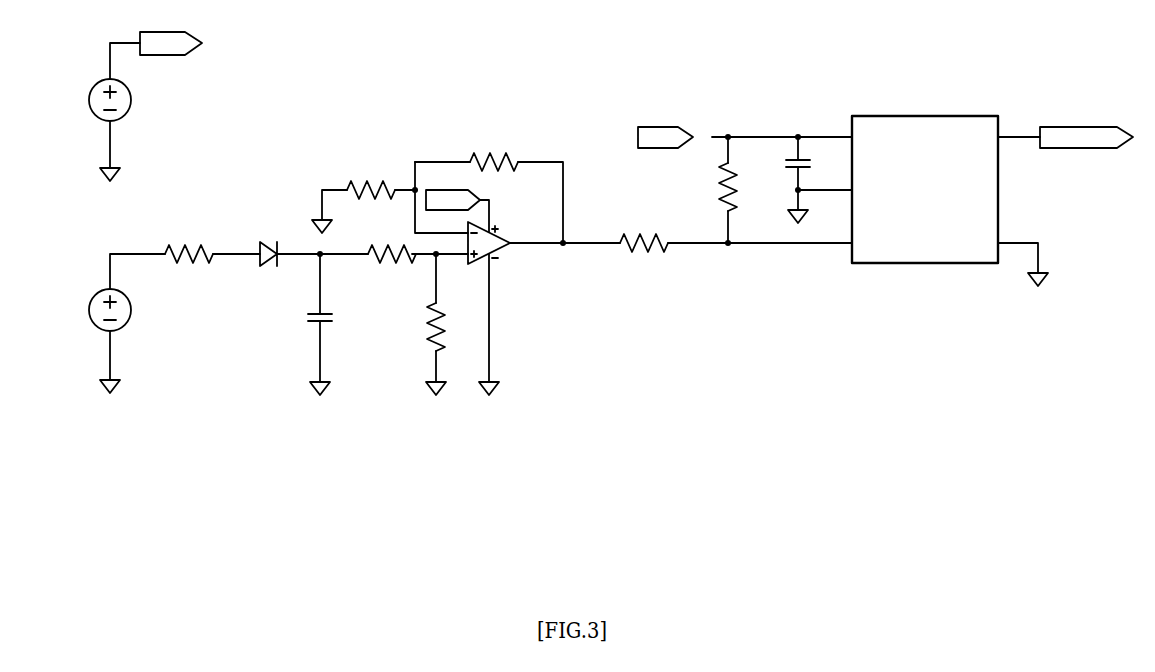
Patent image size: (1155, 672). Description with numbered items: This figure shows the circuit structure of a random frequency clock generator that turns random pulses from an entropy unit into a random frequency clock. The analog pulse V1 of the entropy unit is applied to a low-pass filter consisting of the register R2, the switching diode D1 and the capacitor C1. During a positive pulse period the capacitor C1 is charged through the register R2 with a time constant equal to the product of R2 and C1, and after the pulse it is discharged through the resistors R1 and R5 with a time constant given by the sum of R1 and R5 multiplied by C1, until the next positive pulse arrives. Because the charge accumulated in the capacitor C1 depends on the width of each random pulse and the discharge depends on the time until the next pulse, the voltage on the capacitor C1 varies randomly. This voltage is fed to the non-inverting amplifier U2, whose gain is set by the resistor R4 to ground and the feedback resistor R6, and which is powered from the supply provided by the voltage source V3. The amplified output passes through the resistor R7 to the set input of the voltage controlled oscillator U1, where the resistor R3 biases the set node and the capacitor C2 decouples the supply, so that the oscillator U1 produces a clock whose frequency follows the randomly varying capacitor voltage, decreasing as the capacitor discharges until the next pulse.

The voltage source V3 is at (145, 106).
The analog pulse V1 is at (206, 342).
The register R2 is at (212, 257).
The switching diode D1 is at (306, 257).
The capacitor C1 is at (330, 324).
The resistor R1 is at (418, 255).
The resistor R5 is at (450, 324).
The resistor R4 is at (390, 195).
The resistor R6 is at (490, 186).
The non-inverting amplifier U2 is at (523, 310).
The resistor R7 is at (736, 244).
The resistor R3 is at (745, 185).
The capacitor C2 is at (819, 178).
The voltage controlled oscillator U1 is at (992, 201).